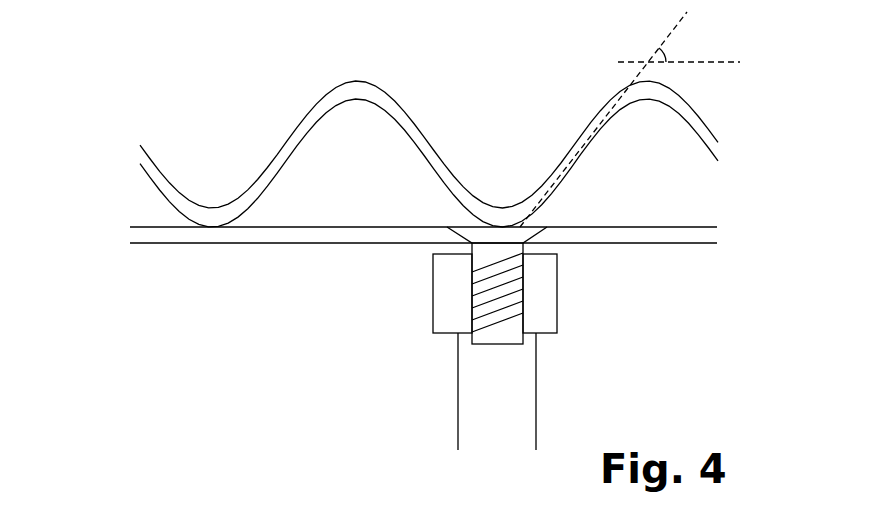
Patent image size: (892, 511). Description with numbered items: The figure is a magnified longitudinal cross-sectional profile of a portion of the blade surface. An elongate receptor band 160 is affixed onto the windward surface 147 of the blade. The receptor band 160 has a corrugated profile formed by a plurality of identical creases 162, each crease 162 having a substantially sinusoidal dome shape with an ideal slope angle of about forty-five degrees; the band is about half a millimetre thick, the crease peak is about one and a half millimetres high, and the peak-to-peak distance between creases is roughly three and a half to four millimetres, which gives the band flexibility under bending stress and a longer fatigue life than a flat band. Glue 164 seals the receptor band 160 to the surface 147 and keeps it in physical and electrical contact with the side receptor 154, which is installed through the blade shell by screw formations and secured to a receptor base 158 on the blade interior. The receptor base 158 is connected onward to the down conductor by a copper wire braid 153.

The receptor band 160 is at (252, 58).
The crease 162 is at (603, 105).
The glue 164 is at (682, 190).
The windward surface 147 is at (137, 227).
The side receptor 154 is at (557, 262).
The receptor base 158 is at (557, 310).
The copper wire braid 153 is at (475, 425).